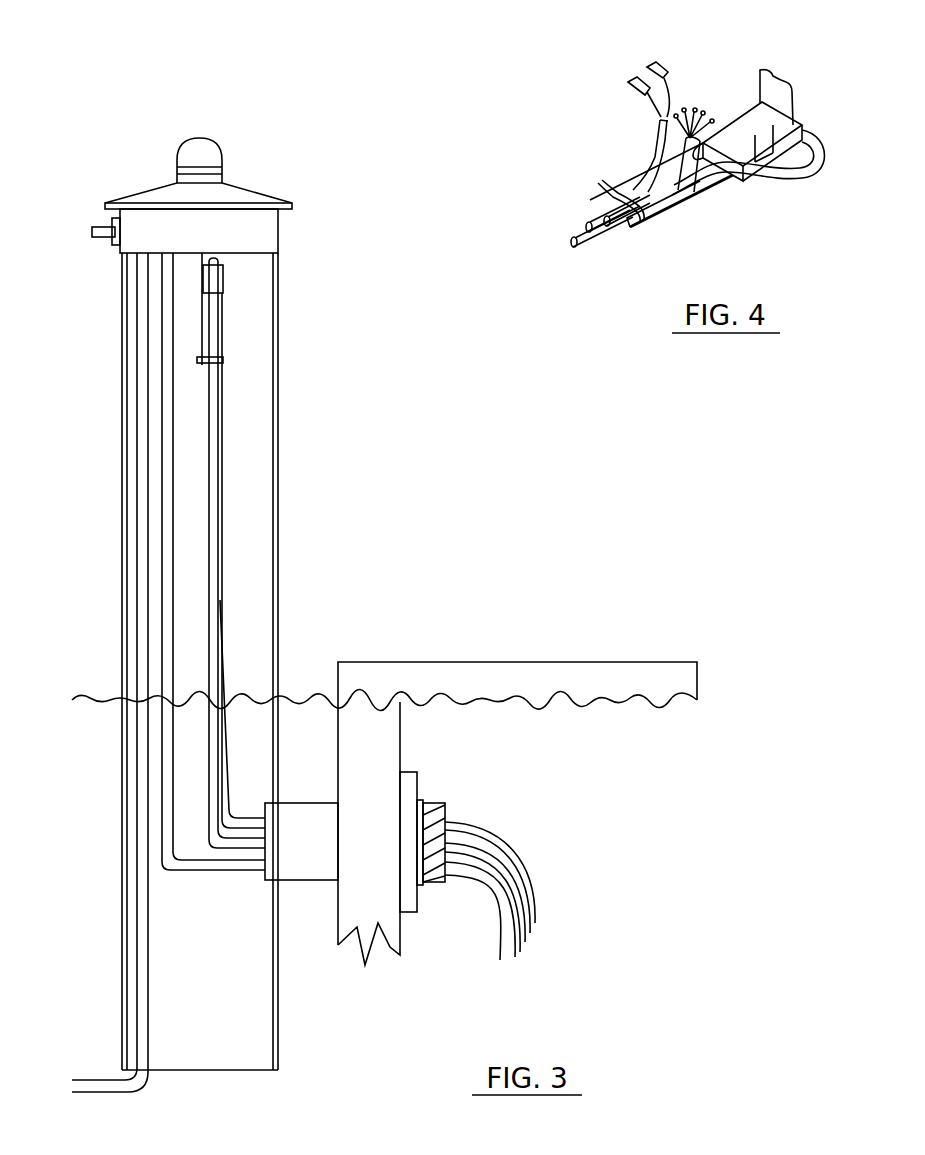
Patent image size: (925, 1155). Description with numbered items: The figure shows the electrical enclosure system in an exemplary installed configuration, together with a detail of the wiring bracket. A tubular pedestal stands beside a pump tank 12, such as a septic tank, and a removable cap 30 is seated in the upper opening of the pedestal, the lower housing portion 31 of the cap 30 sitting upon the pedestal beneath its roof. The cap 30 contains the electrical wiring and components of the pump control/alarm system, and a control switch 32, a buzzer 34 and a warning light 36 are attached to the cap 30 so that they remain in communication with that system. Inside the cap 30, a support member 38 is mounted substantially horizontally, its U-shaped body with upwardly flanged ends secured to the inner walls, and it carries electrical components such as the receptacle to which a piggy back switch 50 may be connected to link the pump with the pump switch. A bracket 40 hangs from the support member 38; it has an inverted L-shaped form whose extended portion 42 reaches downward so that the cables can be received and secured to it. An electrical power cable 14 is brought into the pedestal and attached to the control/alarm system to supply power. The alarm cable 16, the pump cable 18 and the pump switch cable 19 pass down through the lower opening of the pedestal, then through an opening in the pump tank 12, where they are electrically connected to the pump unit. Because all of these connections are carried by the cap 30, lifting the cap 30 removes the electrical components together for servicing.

In FIG. 3, the pump tank 12 is at (527, 761).
In FIG. 3, the electrical power cable 14 is at (140, 406).
In FIG. 4, the electrical power cable 14 is at (710, 132).
In FIG. 3, the alarm cable 16 is at (165, 317).
In FIG. 4, the alarm cable 16 is at (655, 127).
In FIG. 3, the pump cable 18 is at (238, 823).
In FIG. 4, the pump cable 18 is at (572, 217).
In FIG. 3, the pump switch cable 19 is at (228, 843).
In FIG. 4, the pump switch cable 19 is at (807, 172).
In FIG. 3, the cap 30 is at (258, 185).
In FIG. 3, the housing box 31 is at (272, 228).
In FIG. 3, the control switch 32 is at (98, 227).
In FIG. 3, the buzzer 34 is at (110, 240).
In FIG. 3, the warning light 36 is at (212, 153).
In FIG. 4, the support member 38 is at (790, 95).
In FIG. 3, the bracket 40 is at (216, 313).
In FIG. 4, the bracket 40 is at (628, 180).
In FIG. 3, the extended portion 42 is at (203, 343).
In FIG. 4, the extended portion 42 is at (658, 207).
In FIG. 4, the piggy back switch 50 is at (753, 113).